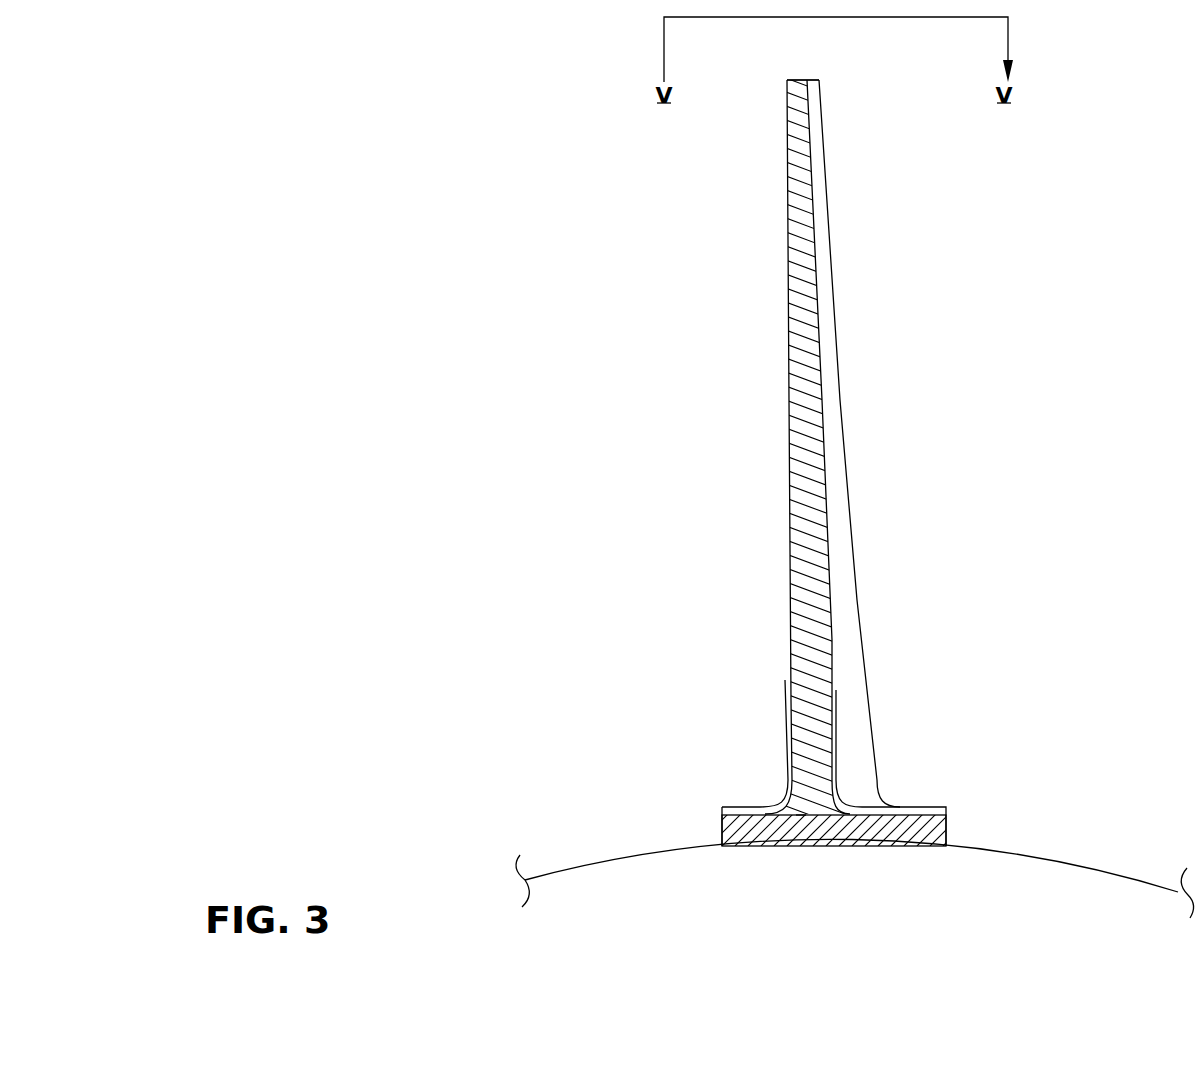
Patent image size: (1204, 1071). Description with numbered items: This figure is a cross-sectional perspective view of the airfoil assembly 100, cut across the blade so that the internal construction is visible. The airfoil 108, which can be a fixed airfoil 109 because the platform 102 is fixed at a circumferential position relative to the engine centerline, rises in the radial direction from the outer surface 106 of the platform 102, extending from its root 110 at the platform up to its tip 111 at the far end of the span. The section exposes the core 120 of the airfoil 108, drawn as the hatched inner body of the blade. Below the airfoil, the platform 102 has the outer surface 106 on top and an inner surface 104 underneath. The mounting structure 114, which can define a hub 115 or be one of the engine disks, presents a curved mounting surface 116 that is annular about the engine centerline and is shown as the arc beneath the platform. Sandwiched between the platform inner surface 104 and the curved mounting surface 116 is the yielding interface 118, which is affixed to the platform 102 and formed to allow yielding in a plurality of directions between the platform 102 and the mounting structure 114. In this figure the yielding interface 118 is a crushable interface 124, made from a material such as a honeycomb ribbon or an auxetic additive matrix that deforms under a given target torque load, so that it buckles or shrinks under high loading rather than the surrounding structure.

The airfoil assembly 100 is at (550, 121).
The tip 111 is at (797, 80).
The core 120 is at (808, 490).
The airfoil 108 is at (843, 582).
The fixed airfoil 109 is at (884, 708).
The root 110 is at (772, 800).
The yielding interface 118 is at (898, 826).
The outer surface 106 is at (743, 806).
The platform 102 is at (933, 807).
The inner surface 104 is at (859, 815).
The crushable interface 124 is at (801, 826).
The mounting structure 114 is at (922, 884).
The hub 115 is at (1038, 888).
The curved mounting surface 116 is at (1083, 860).